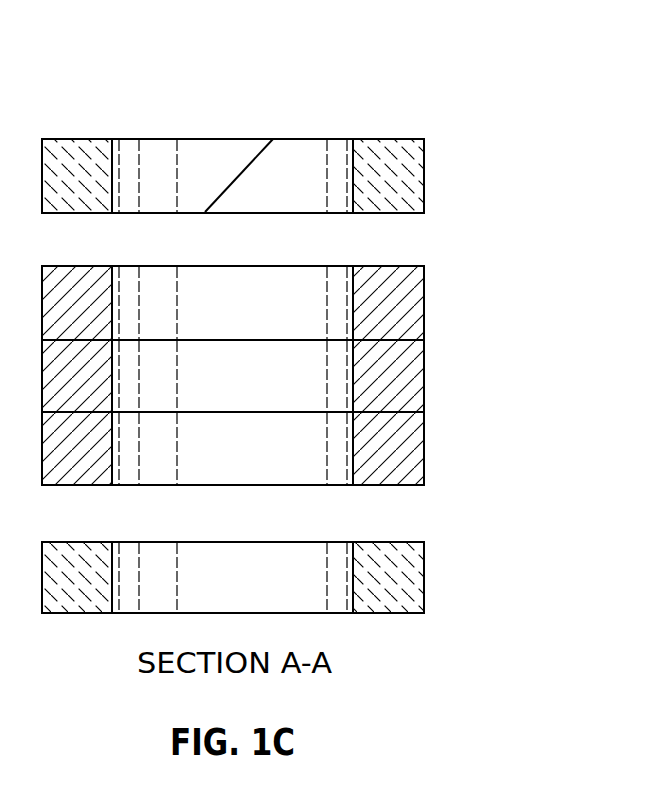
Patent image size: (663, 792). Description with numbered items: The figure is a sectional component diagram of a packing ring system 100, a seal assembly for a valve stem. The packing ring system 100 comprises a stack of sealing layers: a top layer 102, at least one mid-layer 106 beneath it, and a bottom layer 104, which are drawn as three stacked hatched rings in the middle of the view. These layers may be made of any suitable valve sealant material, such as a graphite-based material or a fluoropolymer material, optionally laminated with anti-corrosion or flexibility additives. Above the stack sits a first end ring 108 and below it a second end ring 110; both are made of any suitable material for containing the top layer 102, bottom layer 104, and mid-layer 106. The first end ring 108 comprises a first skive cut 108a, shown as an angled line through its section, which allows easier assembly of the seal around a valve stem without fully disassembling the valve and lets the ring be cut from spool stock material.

The packing ring system 100 is at (456, 54).
The first end ring 108 is at (413, 168).
The first skive cut 108a is at (235, 180).
The top layer 102 is at (413, 309).
The mid-layer 106 is at (413, 376).
The bottom layer 104 is at (413, 443).
The second end ring 110 is at (413, 572).